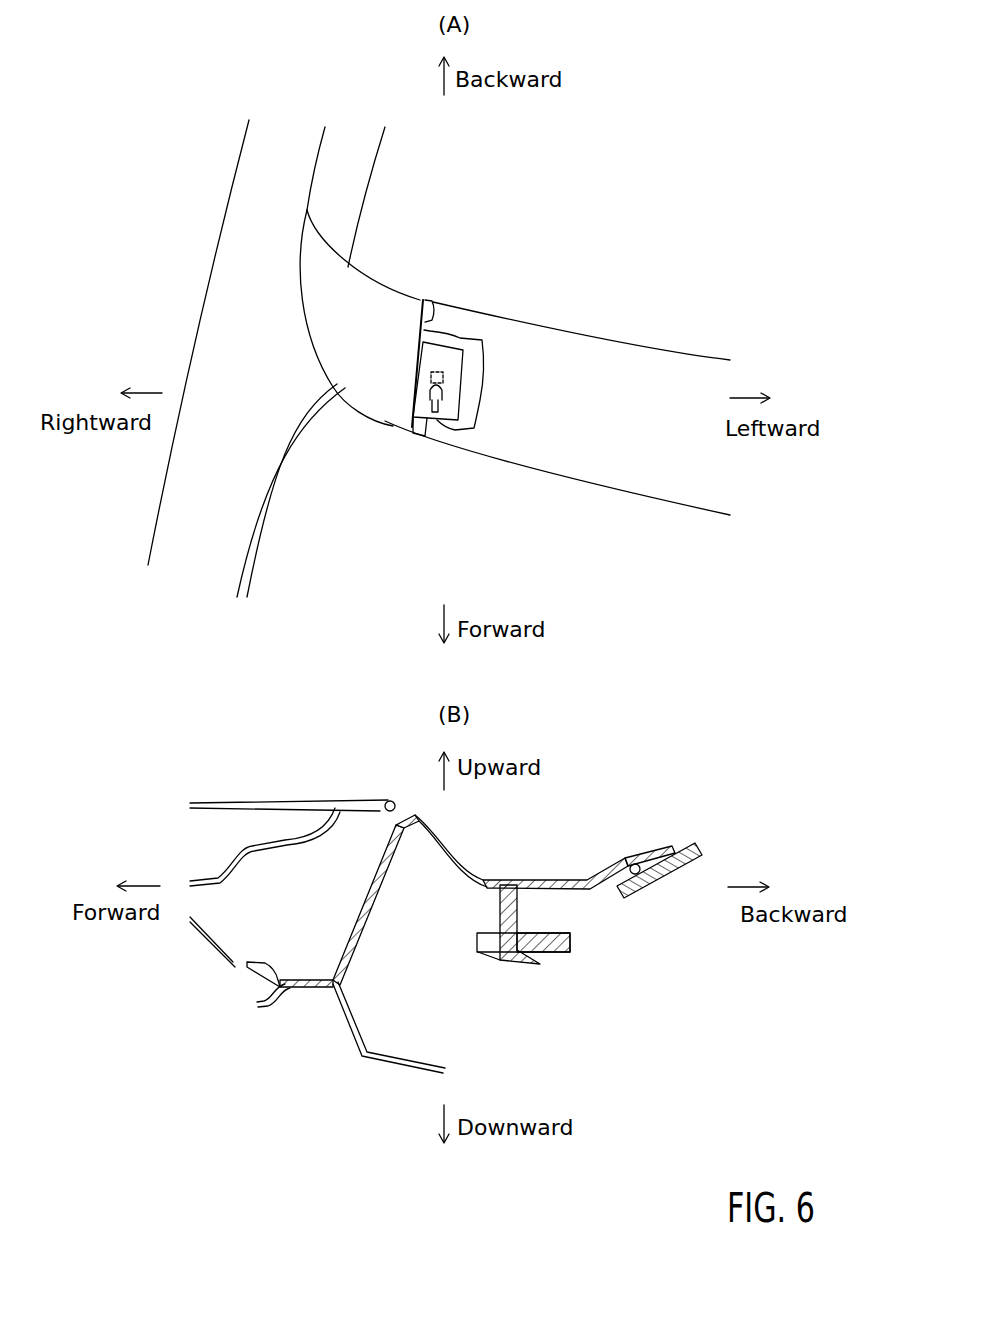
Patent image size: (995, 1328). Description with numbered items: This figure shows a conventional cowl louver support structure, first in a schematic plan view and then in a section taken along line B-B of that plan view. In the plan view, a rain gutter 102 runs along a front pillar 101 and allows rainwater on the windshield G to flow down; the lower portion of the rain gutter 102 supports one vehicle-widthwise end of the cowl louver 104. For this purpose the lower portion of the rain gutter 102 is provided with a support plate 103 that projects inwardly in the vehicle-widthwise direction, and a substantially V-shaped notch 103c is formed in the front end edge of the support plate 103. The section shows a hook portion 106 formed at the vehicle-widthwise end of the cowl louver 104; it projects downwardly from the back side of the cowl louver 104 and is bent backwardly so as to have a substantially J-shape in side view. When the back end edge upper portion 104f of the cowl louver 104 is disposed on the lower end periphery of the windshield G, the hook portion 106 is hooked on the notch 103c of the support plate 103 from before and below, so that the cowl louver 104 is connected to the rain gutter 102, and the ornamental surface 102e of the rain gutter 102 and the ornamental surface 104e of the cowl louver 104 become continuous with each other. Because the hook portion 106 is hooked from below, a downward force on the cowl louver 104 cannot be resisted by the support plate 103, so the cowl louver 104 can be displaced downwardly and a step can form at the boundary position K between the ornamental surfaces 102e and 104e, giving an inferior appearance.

The front pillar 101 is at (249, 203).
The rain gutter 102 is at (378, 206).
The ornamental surface of rain gutter 102e is at (360, 333).
The support plate 103 is at (455, 362).
The notch 103c is at (438, 413).
The cowl louver 104 is at (643, 372).
The ornamental surface of cowl louver 104e is at (629, 452).
The back end edge upper portion of cowl louver 104f is at (683, 353).
The hook portion 106 is at (413, 438).
The windshield G is at (595, 293).
The boundary position K is at (432, 300).
The section line B- B is at (457, 270).